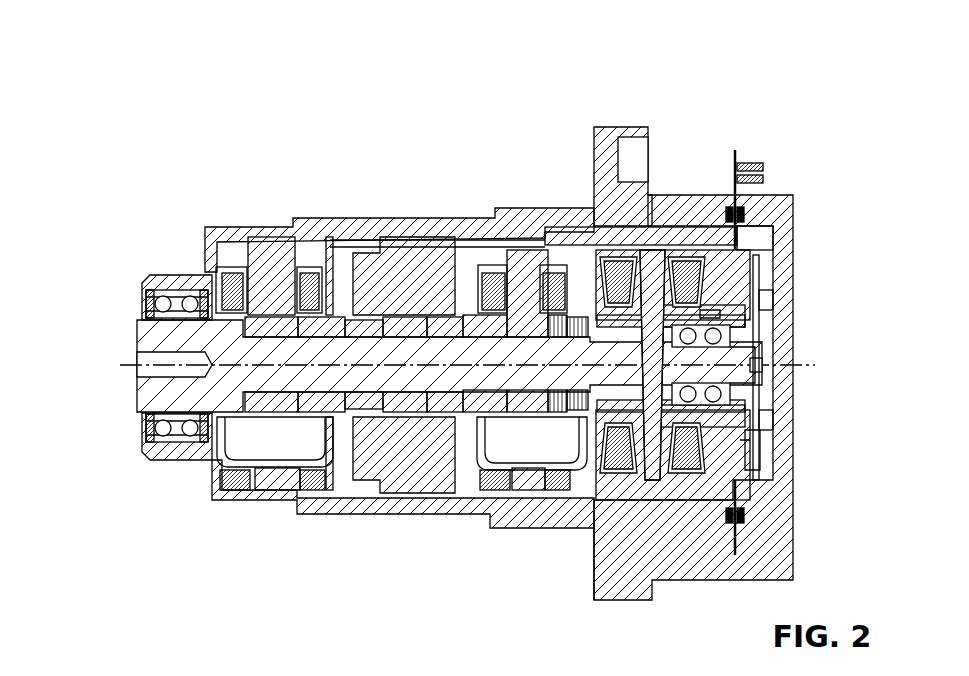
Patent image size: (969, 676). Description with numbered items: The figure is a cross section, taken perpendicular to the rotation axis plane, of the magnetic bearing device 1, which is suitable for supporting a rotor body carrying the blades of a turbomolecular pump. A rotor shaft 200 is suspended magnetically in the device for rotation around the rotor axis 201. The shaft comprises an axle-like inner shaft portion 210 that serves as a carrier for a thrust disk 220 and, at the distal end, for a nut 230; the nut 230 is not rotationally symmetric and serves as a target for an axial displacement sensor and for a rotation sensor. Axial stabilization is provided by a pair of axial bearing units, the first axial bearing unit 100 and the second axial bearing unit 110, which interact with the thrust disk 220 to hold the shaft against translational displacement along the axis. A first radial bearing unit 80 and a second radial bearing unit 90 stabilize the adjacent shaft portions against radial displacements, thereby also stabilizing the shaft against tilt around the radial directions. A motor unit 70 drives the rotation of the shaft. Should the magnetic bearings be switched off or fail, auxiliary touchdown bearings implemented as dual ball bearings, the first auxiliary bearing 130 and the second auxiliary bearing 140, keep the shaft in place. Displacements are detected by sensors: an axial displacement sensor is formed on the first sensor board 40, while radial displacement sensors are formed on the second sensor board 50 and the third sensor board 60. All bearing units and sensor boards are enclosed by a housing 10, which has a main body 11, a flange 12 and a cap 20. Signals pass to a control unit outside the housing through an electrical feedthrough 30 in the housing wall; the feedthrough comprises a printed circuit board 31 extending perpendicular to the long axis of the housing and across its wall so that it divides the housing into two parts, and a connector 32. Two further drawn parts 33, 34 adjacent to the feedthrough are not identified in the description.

The magnetic bearing device 1 is at (118, 92).
The housing 10 is at (418, 548).
The main body 11 is at (330, 500).
The flange 12 is at (608, 150).
The cap 20 is at (788, 242).
The electrical feedthrough 30 is at (743, 110).
The printed circuit board 31 is at (740, 215).
The connector 32 is at (728, 212).
The nut 33 is at (745, 200).
The washer 34 is at (752, 168).
The first sensor board 40 is at (762, 266).
The second sensor board 50 is at (560, 268).
The third sensor board 60 is at (312, 240).
The motor unit 70 is at (405, 250).
The first radial bearing unit 80 is at (485, 268).
The second radial bearing unit 90 is at (273, 240).
The first axial bearing unit 100 is at (600, 470).
The second axial bearing unit 110 is at (685, 452).
The first auxiliary bearing 130 is at (764, 455).
The second auxiliary bearing 140 is at (193, 440).
The rotor shaft 200 is at (126, 292).
The rotor axis 201 is at (126, 358).
The inner shaft portion 210 is at (146, 330).
The thrust disk 220 is at (620, 450).
The nut 230 is at (757, 338).